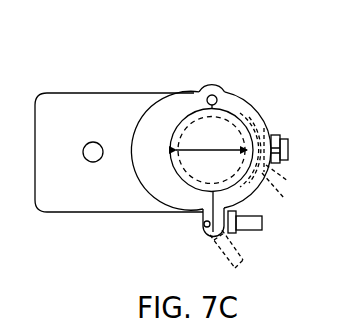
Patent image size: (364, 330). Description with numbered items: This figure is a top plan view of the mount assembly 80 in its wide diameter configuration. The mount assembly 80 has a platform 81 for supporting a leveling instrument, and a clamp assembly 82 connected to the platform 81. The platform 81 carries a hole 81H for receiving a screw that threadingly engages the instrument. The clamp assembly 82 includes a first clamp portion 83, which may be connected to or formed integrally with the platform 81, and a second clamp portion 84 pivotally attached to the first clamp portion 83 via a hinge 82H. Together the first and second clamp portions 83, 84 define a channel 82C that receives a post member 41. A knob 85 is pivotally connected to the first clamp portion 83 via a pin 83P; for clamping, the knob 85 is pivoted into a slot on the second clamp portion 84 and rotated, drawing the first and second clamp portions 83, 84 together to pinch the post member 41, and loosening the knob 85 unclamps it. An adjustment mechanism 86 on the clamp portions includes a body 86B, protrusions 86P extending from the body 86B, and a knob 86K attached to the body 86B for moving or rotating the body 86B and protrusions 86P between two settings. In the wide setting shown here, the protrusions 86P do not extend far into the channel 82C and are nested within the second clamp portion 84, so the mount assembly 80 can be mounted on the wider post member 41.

The mount assembly 80 is at (296, 67).
The platform 81 is at (110, 103).
The hole 81H is at (88, 141).
The clamp assembly 82 is at (268, 205).
The channel 82C is at (165, 186).
The hinge 82H is at (211, 95).
The first clamp portion 83 is at (182, 108).
The pin 83P is at (204, 226).
The second clamp portion 84 is at (258, 126).
The knob 85 is at (252, 226).
The adjustment mechanism 86 is at (283, 134).
The knob 86K is at (289, 150).
The body 86B is at (289, 182).
The protrusions 86P is at (289, 201).
The post member 41 is at (238, 108).